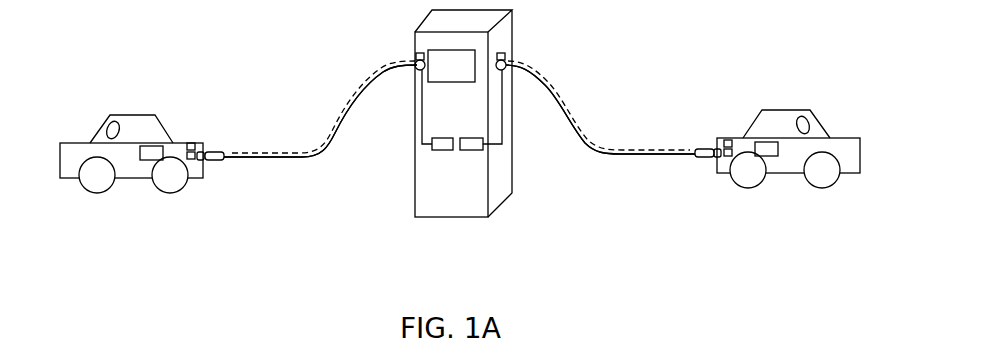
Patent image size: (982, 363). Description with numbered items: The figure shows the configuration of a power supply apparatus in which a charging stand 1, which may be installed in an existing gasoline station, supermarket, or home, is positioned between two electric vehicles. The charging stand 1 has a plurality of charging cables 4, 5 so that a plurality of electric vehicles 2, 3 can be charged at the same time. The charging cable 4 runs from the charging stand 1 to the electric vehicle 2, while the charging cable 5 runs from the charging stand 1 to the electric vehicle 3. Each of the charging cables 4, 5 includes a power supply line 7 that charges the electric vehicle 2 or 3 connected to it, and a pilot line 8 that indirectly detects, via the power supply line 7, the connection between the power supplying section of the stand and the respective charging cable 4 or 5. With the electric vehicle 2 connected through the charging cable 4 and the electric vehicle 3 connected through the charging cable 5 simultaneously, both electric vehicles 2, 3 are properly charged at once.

The charging stand 1 is at (433, 185).
The electric vehicle 2 is at (69, 168).
The electric vehicle 3 is at (788, 167).
The charging cable 4 is at (278, 162).
The charging cable 5 is at (677, 158).
The power supply line 7 is at (330, 152).
The pilot line 8 is at (345, 120).